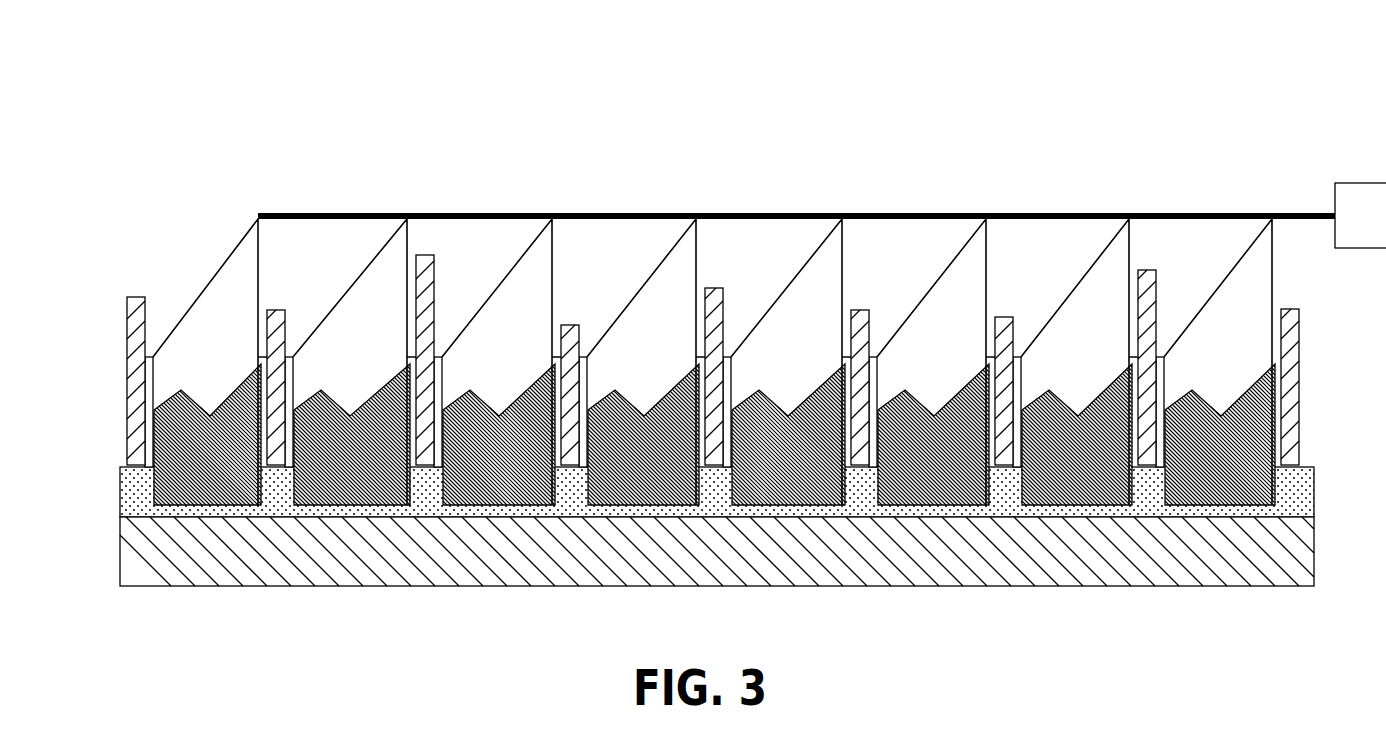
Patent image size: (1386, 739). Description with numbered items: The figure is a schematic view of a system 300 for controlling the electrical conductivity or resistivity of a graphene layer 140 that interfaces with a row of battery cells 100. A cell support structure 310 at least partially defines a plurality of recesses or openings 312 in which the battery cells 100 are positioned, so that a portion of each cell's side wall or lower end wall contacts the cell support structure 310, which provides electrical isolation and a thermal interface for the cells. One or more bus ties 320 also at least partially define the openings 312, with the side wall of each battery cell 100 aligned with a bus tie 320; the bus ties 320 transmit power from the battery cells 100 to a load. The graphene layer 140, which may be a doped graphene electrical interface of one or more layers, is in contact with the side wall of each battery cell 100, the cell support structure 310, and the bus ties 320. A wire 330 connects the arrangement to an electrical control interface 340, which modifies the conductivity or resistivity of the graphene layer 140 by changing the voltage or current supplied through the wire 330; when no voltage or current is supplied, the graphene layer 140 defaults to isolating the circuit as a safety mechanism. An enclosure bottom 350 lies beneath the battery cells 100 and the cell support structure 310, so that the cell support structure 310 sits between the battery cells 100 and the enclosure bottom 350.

The system 300 is at (280, 98).
The battery cell 100 is at (217, 402).
The graphene layer 140 is at (148, 405).
The cell support structure 310 is at (120, 500).
The openings 312 is at (188, 260).
The bus tie 320 is at (127, 323).
The wire 330 is at (335, 212).
The electrical control interface 340 is at (1384, 230).
The enclosure bottom 350 is at (120, 567).